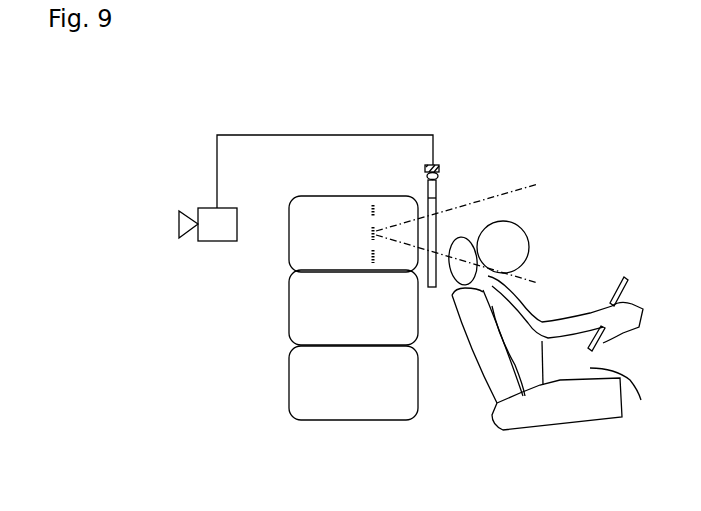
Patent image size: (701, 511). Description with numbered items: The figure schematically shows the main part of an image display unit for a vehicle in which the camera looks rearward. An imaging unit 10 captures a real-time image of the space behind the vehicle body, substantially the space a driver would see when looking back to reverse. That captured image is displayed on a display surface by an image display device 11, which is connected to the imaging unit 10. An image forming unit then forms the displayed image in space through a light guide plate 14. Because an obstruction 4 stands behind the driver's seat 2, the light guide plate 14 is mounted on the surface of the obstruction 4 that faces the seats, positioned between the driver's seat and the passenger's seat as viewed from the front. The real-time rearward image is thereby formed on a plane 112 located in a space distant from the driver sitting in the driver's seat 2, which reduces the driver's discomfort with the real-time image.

The driver's seat 2 is at (560, 415).
The obstruction 4 is at (350, 196).
The imaging unit 10 is at (179, 224).
The image display device 11 is at (439, 164).
The light guide plate 14 is at (438, 199).
The plane 112 is at (370, 254).